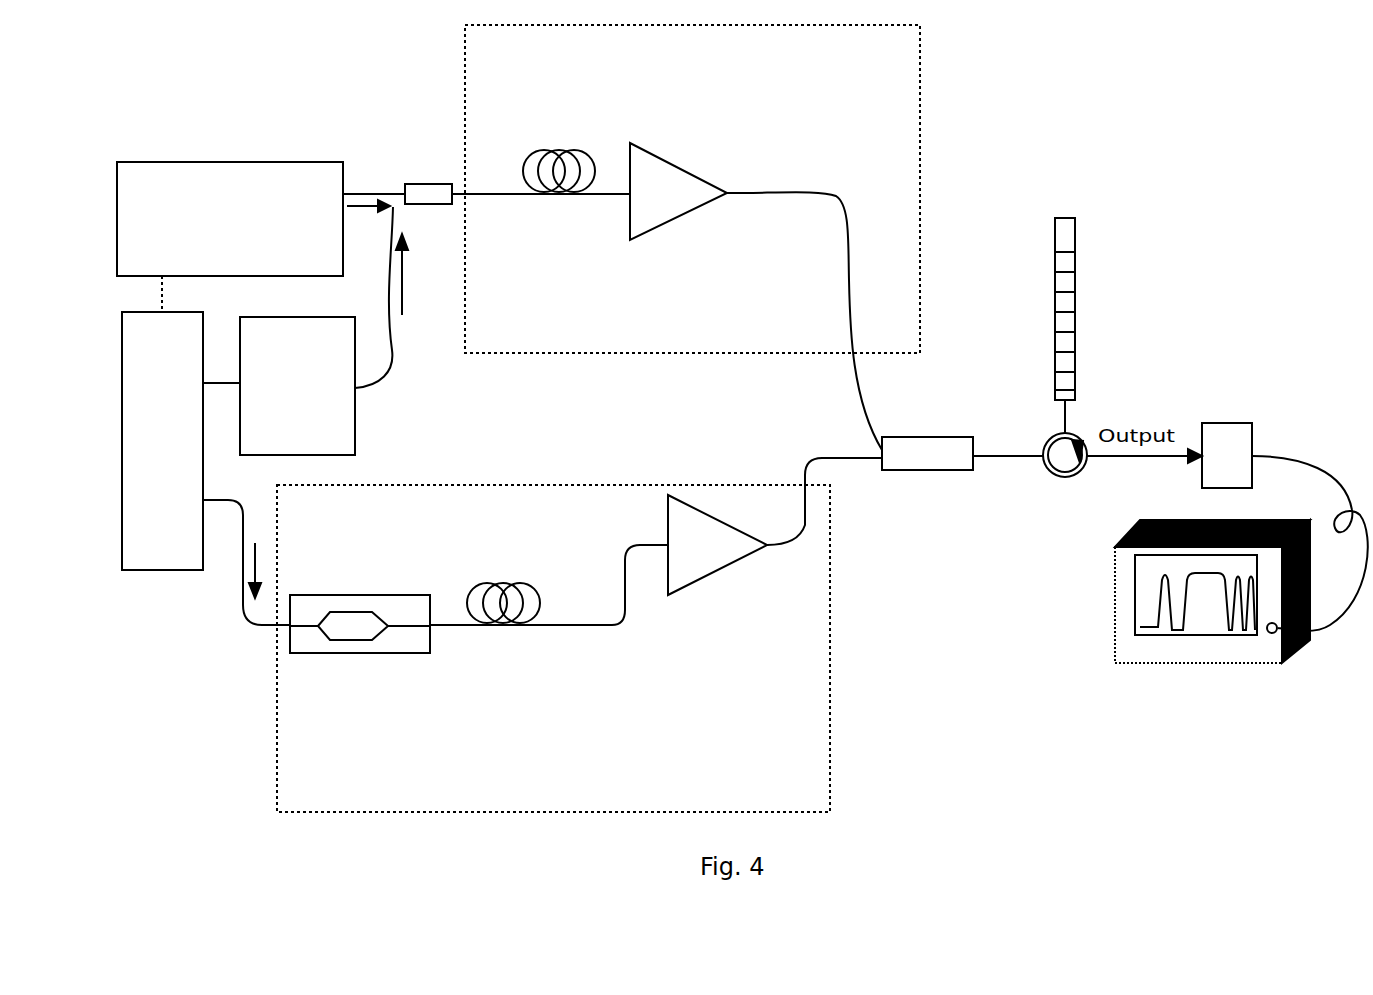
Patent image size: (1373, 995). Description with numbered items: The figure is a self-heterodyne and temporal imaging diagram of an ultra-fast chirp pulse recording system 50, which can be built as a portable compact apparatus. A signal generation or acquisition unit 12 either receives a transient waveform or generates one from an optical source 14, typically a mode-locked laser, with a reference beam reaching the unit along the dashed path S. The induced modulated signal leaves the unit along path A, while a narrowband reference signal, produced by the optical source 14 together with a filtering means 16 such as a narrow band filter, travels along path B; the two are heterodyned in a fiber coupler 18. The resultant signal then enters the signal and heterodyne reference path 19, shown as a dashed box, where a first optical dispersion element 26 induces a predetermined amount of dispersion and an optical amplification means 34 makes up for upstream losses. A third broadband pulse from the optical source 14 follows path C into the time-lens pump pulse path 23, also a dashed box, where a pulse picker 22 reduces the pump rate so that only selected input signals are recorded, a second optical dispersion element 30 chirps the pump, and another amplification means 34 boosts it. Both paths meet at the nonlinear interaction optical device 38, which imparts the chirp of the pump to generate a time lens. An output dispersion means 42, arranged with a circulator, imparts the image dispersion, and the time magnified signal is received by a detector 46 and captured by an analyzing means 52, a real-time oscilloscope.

The ultra-fast chirp pulse recording system 50 is at (250, 50).
The signal generation or acquisition unit 12 is at (223, 162).
The optical source 14 is at (143, 571).
The filtering means 16 is at (355, 422).
The fiber coupler 18 is at (433, 183).
The signal and heterodyne reference path 19 is at (920, 175).
The pulse picker 22 is at (395, 653).
The time-lens pump pulse path 23 is at (830, 688).
The first optical dispersion element 26 is at (528, 153).
The second optical dispersion element 30 is at (540, 605).
The optical amplification means 34 is at (668, 222).
The nonlinear interaction optical device 38 is at (895, 470).
The output dispersion means 42 is at (1075, 262).
The detector 46 is at (1225, 423).
The analyzing means 52 is at (1115, 608).
The dashed path S is at (162, 292).
The path A is at (393, 193).
The path B is at (392, 357).
The path C is at (258, 625).